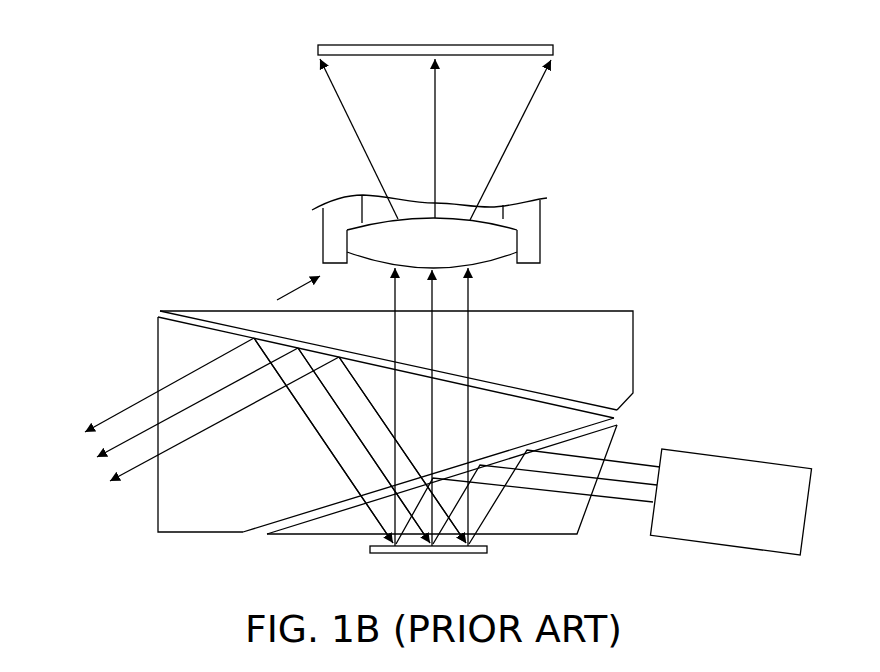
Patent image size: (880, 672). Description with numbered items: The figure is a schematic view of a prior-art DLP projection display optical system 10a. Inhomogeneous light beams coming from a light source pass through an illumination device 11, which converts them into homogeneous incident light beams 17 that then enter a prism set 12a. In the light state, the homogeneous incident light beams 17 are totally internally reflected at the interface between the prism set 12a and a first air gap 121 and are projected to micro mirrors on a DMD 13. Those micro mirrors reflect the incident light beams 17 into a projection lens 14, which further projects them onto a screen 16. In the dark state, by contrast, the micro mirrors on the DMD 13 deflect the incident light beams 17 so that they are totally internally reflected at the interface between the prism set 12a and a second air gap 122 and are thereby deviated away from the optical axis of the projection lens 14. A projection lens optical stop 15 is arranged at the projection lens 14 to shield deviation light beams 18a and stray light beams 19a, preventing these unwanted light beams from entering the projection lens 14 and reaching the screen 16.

The projection display optical system 10a is at (712, 173).
The illumination device 11 is at (757, 460).
The prism set 12a is at (399, 429).
The first air gap 121 is at (260, 534).
The second air gap 122 is at (160, 311).
The DMD 13 is at (487, 548).
The projection lens 14 is at (490, 217).
The projection lens optical stop 15 is at (540, 223).
The screen 16 is at (553, 52).
The homogeneous incident light beams 17 is at (623, 462).
The deviation light beams 18a is at (74, 428).
The stray light beams 19a is at (291, 280).